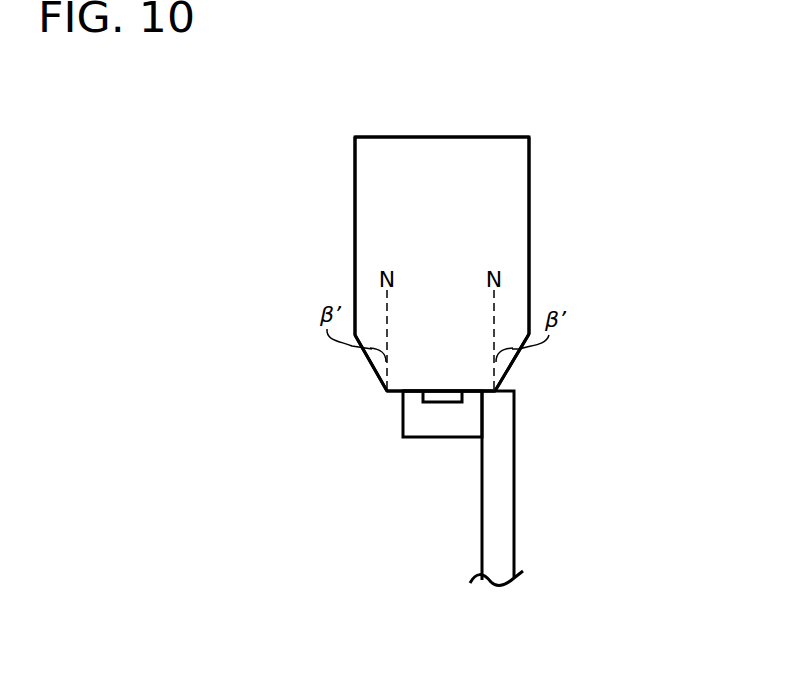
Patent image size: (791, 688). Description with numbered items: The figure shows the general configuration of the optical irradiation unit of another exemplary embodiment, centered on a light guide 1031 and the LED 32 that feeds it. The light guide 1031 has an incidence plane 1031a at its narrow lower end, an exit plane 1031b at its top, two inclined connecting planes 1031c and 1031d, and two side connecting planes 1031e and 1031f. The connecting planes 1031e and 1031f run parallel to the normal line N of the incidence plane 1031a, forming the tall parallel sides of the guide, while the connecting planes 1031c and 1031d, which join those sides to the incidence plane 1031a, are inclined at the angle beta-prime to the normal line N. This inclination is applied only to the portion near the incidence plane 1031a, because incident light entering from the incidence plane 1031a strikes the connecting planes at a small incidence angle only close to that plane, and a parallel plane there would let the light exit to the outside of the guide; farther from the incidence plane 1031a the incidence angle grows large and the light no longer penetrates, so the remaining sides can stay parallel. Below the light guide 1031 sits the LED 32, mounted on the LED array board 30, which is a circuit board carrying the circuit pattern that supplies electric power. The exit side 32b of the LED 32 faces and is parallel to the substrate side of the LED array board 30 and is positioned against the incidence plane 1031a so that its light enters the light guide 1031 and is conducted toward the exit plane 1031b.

The light guide 1031 is at (568, 191).
The incidence plane 1031a is at (387, 394).
The exit plane 1031b is at (505, 137).
The connecting plane 1031c is at (369, 360).
The connecting plane 1031d is at (515, 360).
The connecting plane 1031e is at (355, 233).
The connecting plane 1031f is at (529, 248).
The LED 32 is at (403, 423).
The exit side 32b is at (442, 394).
The LED array board 30 is at (514, 497).